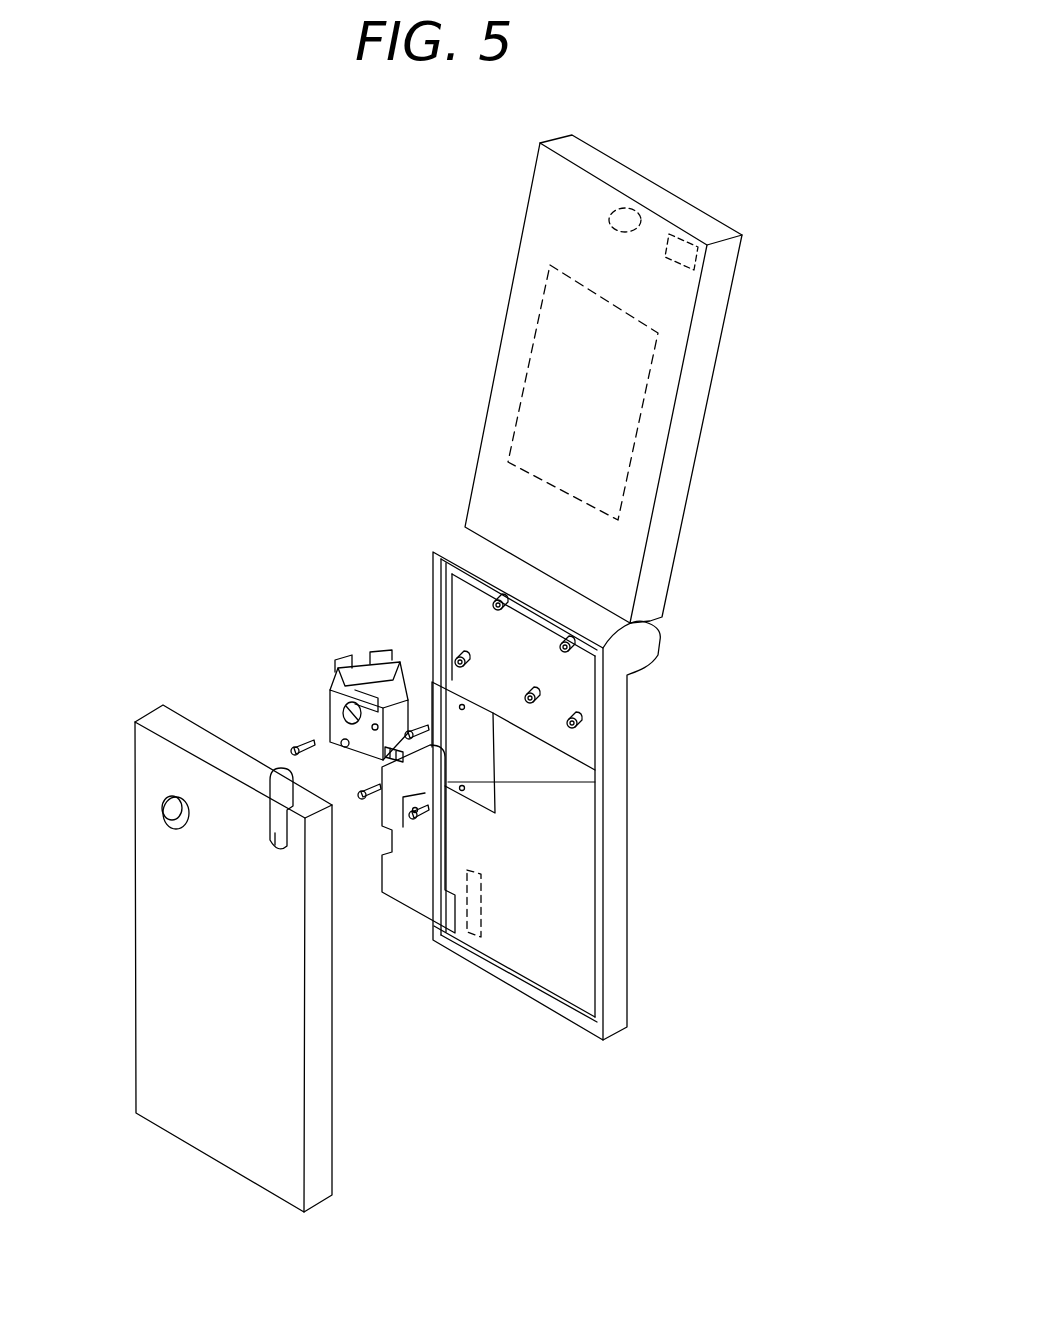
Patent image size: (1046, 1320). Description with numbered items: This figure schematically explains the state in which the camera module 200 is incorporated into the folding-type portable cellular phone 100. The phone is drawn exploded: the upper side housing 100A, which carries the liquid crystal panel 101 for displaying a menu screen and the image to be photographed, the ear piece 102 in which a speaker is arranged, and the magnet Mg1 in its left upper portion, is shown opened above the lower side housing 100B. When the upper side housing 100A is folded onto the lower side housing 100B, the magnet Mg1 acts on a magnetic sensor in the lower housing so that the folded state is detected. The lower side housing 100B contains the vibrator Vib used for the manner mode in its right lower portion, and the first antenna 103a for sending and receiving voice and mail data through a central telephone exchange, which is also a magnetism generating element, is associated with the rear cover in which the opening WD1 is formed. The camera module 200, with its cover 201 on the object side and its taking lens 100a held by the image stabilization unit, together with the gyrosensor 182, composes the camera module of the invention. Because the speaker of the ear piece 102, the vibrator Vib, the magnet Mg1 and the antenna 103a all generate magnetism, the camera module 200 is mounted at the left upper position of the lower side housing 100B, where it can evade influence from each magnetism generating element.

The portable cellular phone 100 is at (448, 277).
The upper side housing 100A is at (653, 582).
The lower side housing 100B is at (617, 923).
The taking lens 100a is at (383, 839).
The liquid crystal panel 101 is at (610, 440).
The ear piece 102 is at (622, 214).
The magnet Mg1 is at (700, 278).
The gyrosensor 182 is at (480, 773).
The vibrator Vib is at (473, 913).
The camera module 200 is at (334, 662).
The cover 201 is at (382, 687).
The window hole WD1 is at (162, 813).
The first antenna 103a is at (277, 850).